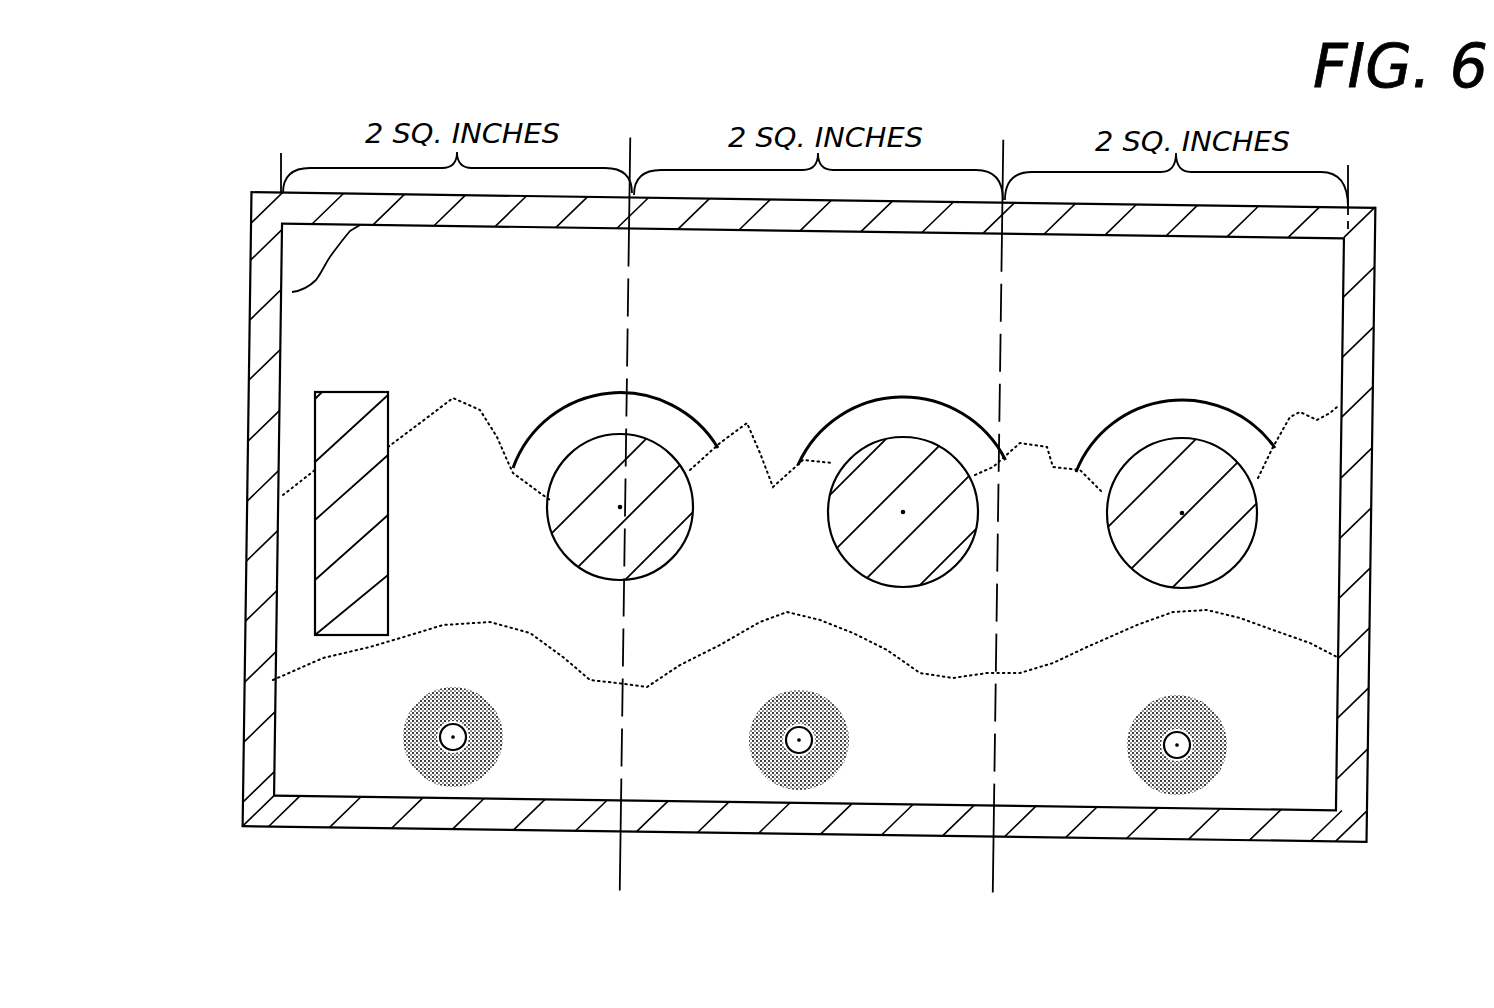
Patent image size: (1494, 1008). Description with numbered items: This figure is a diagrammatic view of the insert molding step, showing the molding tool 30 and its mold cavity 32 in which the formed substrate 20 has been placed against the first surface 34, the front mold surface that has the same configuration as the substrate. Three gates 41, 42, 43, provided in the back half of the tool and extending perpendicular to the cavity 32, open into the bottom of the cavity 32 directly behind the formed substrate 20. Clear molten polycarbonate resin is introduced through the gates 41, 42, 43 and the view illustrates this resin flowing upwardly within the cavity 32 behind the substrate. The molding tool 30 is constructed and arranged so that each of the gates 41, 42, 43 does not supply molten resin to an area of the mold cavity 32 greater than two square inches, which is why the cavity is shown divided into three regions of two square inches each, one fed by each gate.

The molding tool 30 is at (1392, 316).
The first surface 34 is at (300, 247).
The formed substrate 20 is at (292, 292).
The cavity 32 is at (304, 345).
The gate 41 is at (453, 750).
The gate 42 is at (798, 753).
The gate 43 is at (1175, 758).